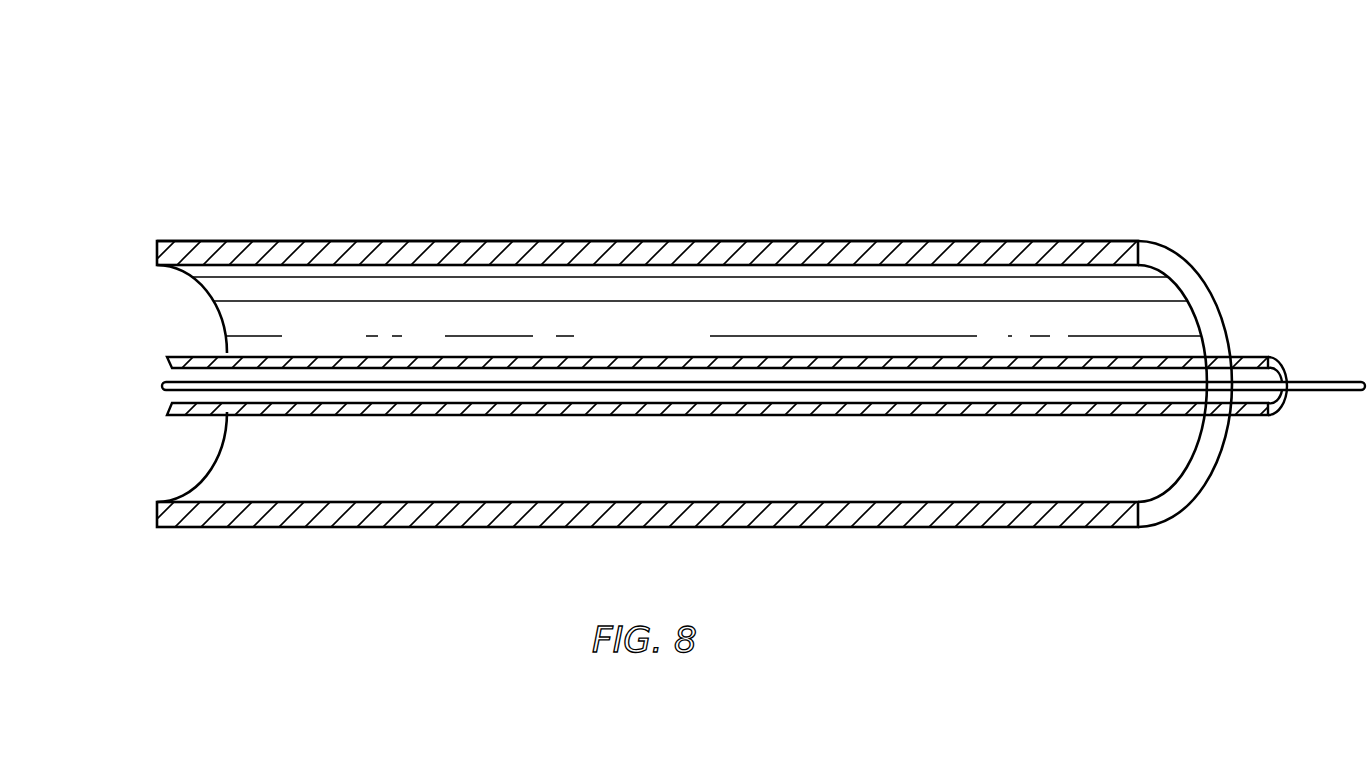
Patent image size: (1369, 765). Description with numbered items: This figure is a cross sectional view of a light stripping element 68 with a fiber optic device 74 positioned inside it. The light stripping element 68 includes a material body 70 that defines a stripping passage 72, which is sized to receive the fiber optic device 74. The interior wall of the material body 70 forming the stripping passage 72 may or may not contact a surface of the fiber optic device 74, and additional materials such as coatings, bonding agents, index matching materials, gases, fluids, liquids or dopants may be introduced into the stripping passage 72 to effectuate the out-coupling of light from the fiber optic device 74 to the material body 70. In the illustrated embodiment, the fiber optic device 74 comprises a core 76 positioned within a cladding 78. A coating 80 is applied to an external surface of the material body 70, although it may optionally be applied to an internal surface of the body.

The light stripping element 68 is at (1112, 152).
The material body 70 is at (887, 250).
The stripping passage 72 is at (720, 303).
The fiber optic device 74 is at (721, 303).
The core 76 is at (410, 380).
The cladding 78 is at (557, 357).
The coating 80 is at (330, 240).